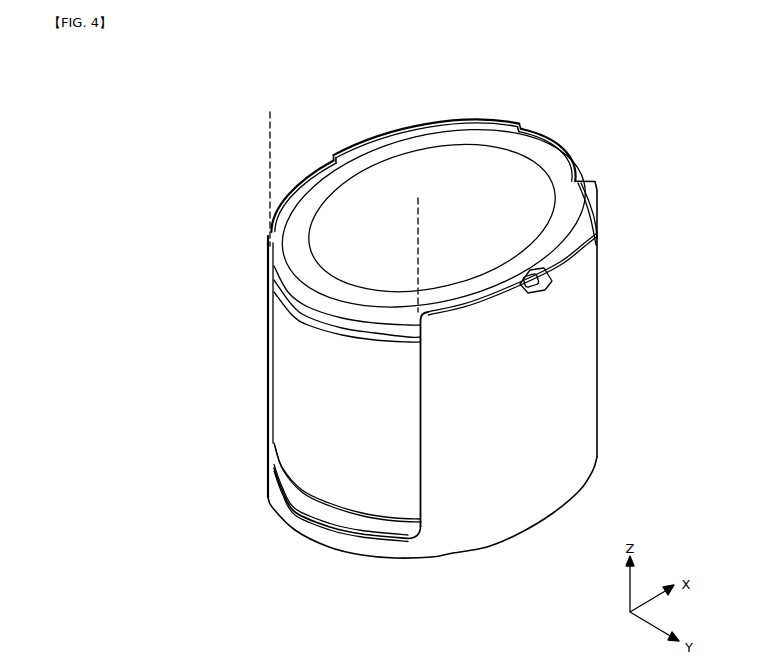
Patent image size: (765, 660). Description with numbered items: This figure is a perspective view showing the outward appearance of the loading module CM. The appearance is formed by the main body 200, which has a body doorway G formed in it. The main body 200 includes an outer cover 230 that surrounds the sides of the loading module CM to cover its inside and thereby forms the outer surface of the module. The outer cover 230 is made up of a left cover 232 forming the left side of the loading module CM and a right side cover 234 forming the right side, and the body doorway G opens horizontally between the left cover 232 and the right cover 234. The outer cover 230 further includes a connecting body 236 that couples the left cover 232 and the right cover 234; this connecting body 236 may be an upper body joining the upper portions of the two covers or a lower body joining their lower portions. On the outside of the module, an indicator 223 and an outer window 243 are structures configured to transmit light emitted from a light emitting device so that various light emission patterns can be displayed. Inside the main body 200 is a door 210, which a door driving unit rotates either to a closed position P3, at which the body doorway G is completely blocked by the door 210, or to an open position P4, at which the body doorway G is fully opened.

The loading module CM is at (603, 108).
The main body 200 is at (608, 326).
The indicator 223 is at (364, 187).
The outer window 243 is at (322, 311).
The door 210 is at (290, 373).
The outer cover 230 is at (197, 448).
The left cover 232 is at (274, 440).
The connecting body 236 is at (273, 494).
The right side cover 234 is at (514, 483).
The body doorway G is at (328, 534).
The closed position P3 is at (269, 170).
The open position P4 is at (418, 245).